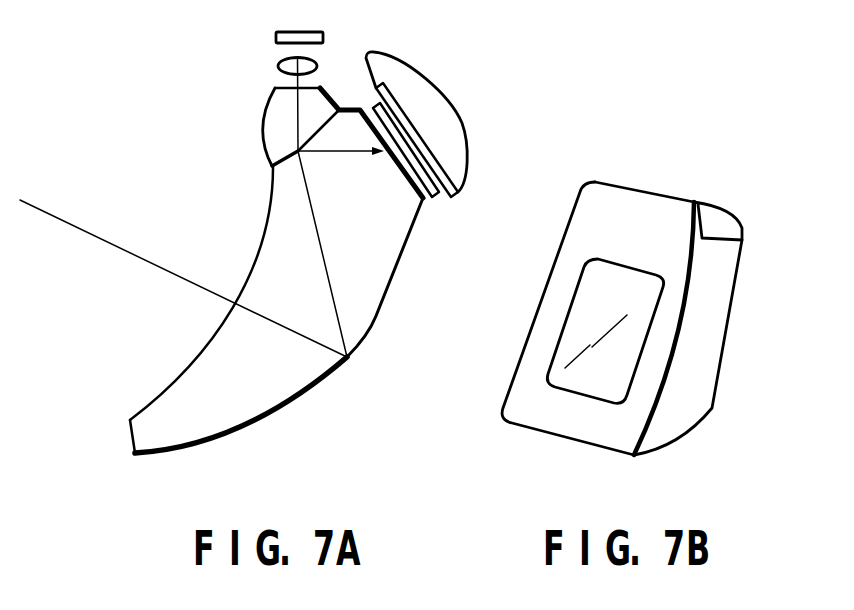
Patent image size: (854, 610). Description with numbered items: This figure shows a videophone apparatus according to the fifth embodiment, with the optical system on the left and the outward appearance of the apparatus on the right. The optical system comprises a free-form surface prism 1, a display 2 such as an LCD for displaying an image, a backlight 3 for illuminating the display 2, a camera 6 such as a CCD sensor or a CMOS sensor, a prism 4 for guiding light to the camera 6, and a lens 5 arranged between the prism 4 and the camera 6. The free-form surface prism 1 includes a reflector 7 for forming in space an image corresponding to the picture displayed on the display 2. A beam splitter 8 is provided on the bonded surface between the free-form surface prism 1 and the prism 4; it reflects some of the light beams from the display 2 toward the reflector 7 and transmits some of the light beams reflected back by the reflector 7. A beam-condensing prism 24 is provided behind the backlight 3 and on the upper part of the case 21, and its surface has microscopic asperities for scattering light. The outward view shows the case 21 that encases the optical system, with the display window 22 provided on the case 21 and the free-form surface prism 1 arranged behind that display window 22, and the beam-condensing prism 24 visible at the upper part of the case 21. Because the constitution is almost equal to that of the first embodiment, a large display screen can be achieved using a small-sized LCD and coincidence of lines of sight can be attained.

In FIG. 7A, the free-form surface prism 1 is at (265, 398).
In FIG. 7A, the display 2 is at (432, 199).
In FIG. 7A, the backlight 3 is at (456, 198).
In FIG. 7A, the prism 4 is at (267, 127).
In FIG. 7A, the lens 5 is at (280, 65).
In FIG. 7A, the camera 6 is at (278, 33).
In FIG. 7A, the reflector 7 is at (326, 382).
In FIG. 7A, the beam splitter 8 is at (281, 167).
In FIG. 7B, the case 21 is at (690, 404).
In FIG. 7B, the display window 22 is at (551, 384).
In FIG. 7A, the beam-condensing prism 24 is at (443, 113).
In FIG. 7B, the beam-condensing prism 24 is at (724, 224).